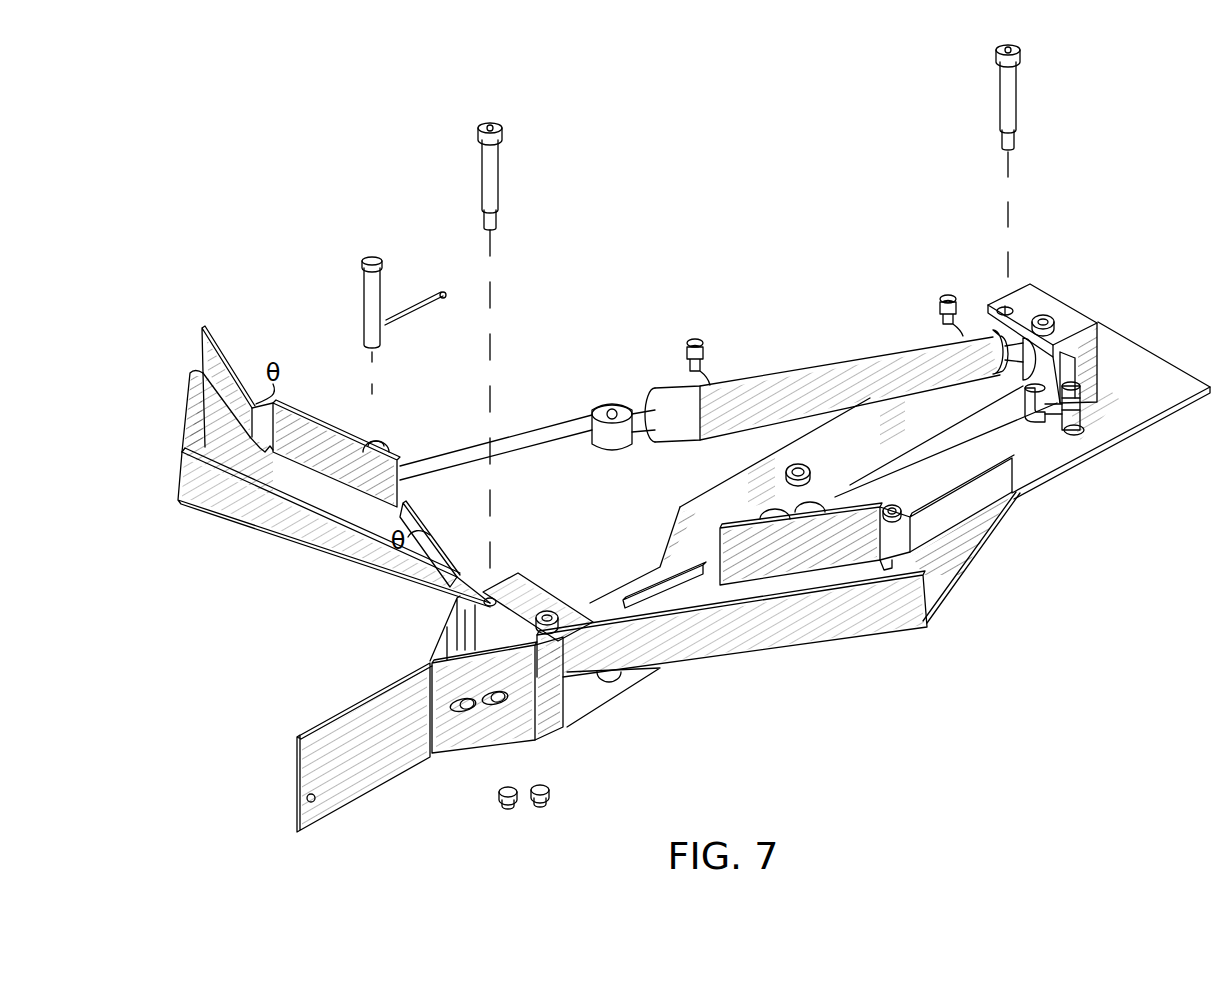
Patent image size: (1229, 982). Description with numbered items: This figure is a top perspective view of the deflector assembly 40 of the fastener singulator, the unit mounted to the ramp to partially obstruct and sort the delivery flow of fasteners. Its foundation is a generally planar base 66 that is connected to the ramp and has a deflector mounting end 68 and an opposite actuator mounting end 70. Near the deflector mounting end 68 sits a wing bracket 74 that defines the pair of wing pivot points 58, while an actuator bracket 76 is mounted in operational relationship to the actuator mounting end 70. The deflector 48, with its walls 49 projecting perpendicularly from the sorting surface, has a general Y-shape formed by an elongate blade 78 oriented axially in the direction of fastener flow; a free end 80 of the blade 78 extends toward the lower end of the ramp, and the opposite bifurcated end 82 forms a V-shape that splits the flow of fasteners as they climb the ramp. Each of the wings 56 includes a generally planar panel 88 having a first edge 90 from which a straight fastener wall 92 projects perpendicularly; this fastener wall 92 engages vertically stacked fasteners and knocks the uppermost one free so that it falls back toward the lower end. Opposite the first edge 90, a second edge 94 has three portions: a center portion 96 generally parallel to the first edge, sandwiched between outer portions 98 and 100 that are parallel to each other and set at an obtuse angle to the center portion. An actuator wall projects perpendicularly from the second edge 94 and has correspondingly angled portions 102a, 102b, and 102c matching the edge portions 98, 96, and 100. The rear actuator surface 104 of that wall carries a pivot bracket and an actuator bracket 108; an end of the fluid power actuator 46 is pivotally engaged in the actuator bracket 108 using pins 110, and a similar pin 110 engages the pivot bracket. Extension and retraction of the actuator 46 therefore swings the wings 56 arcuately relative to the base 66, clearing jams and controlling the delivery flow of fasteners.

The deflector assembly 40 is at (738, 290).
The fluid power actuator 46 is at (803, 378).
The deflector 48 is at (318, 735).
The walls 49 is at (412, 740).
The wings 56 is at (237, 392).
The wing pivot points 58 is at (487, 595).
The base 66 is at (1110, 438).
The deflector mounting end 68 is at (550, 735).
The actuator mounting end 70 is at (1145, 346).
The wing bracket 74 is at (530, 587).
The actuator bracket 76 is at (1046, 305).
The blade 78 is at (320, 740).
The free end 80 is at (297, 797).
The bifurcated end 82 is at (450, 745).
The planar panel 88 is at (192, 395).
The first edge 90 is at (207, 533).
The fastener wall 92 is at (253, 513).
The second edge 94 is at (195, 368).
The center portion 96 is at (316, 432).
The outer portion 98 is at (428, 482).
The outer portion 100 is at (210, 463).
The angled portion 102a is at (392, 465).
The angled portion 102b is at (347, 443).
The angled portion 102c is at (240, 386).
The actuator surface 104 is at (873, 398).
The actuator bracket 108 is at (383, 440).
The pins 110 is at (492, 165).